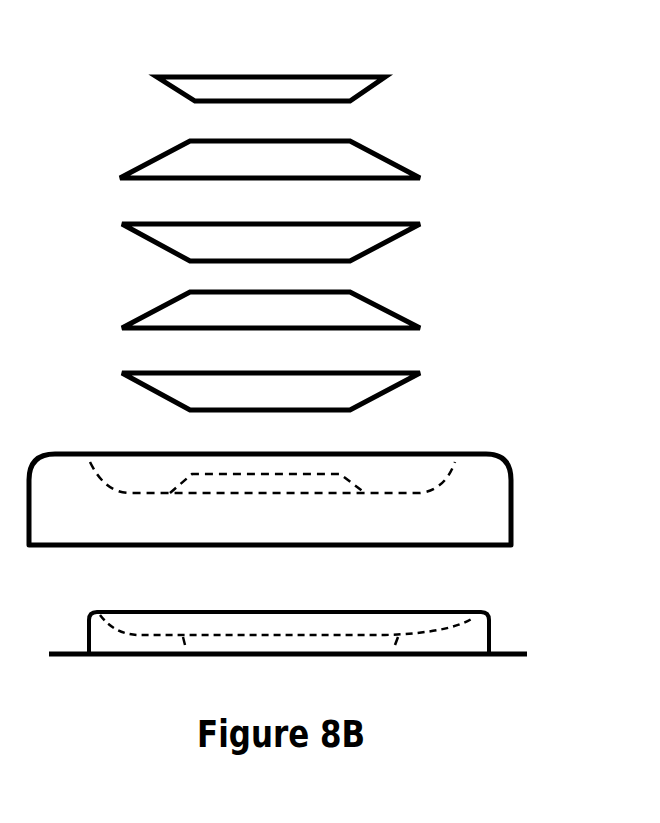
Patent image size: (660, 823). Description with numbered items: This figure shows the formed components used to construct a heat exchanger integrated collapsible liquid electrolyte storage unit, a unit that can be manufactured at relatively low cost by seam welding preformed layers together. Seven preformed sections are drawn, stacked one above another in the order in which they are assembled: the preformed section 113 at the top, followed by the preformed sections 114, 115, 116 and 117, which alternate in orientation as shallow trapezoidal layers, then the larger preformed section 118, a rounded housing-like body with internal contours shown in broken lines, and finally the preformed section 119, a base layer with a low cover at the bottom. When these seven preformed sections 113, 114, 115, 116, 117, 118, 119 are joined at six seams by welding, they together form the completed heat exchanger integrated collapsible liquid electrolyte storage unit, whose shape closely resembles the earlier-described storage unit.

The preformed section 113 is at (397, 78).
The preformed section 114 is at (395, 156).
The preformed section 115 is at (428, 223).
The preformed section 116 is at (420, 320).
The preformed section 117 is at (428, 377).
The preformed section 118 is at (521, 553).
The preformed section 119 is at (513, 661).